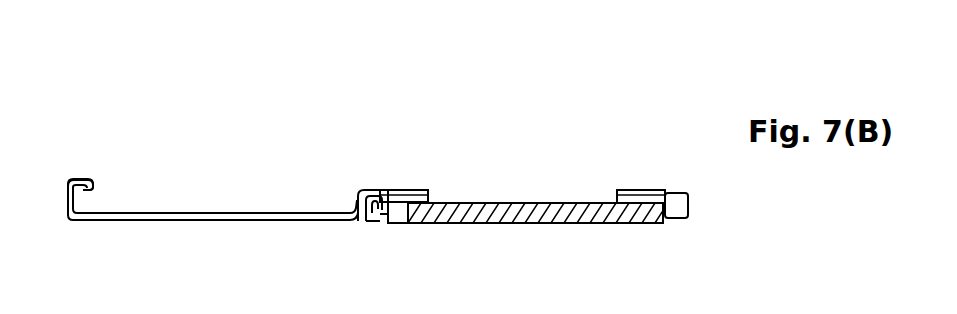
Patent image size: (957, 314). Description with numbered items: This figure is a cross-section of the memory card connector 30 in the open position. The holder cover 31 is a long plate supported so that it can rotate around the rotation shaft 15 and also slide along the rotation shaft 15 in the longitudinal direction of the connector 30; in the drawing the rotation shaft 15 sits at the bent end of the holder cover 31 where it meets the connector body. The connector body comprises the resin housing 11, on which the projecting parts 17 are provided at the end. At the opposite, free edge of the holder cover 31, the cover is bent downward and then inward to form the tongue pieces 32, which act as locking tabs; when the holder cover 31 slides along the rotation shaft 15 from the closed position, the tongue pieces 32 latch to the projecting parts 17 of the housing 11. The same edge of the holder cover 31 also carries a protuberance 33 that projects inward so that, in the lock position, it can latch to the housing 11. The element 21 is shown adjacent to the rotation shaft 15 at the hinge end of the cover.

The connector 30 is at (645, 147).
The resin housing 11 is at (651, 191).
The projecting part 17 is at (680, 219).
The holder cover 31 is at (185, 223).
The tongue piece 32 is at (86, 181).
The protuberance 33 is at (81, 189).
The clip 21 is at (378, 188).
The rotation shaft 15 is at (366, 225).